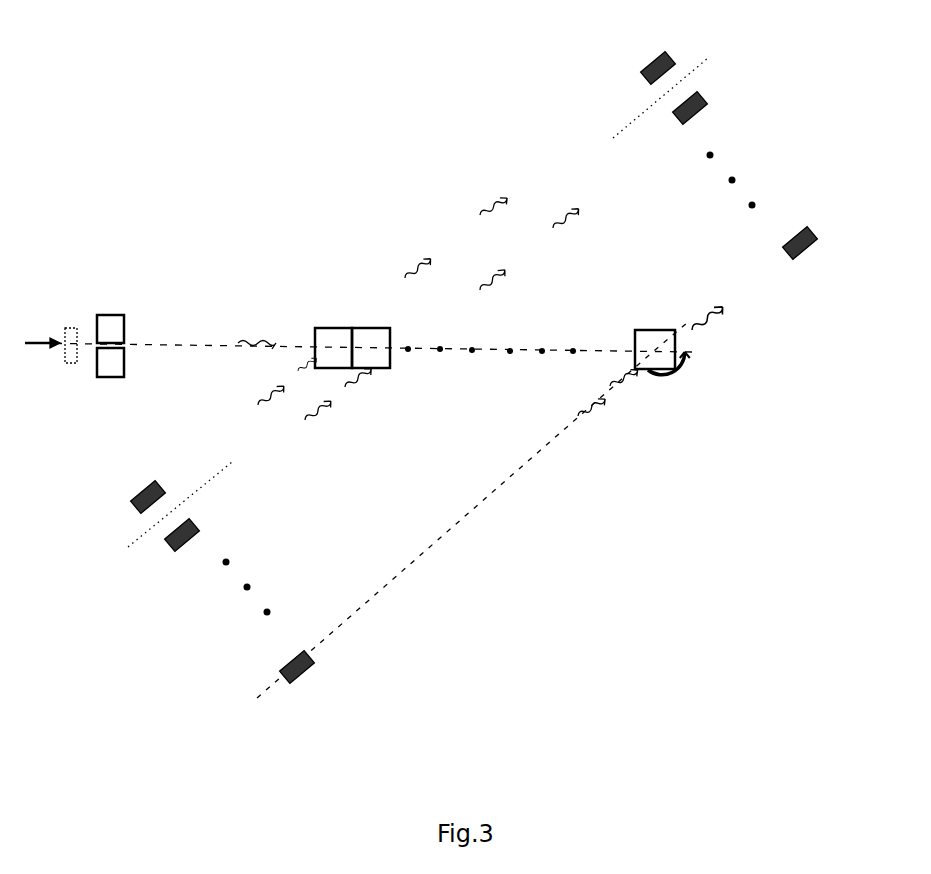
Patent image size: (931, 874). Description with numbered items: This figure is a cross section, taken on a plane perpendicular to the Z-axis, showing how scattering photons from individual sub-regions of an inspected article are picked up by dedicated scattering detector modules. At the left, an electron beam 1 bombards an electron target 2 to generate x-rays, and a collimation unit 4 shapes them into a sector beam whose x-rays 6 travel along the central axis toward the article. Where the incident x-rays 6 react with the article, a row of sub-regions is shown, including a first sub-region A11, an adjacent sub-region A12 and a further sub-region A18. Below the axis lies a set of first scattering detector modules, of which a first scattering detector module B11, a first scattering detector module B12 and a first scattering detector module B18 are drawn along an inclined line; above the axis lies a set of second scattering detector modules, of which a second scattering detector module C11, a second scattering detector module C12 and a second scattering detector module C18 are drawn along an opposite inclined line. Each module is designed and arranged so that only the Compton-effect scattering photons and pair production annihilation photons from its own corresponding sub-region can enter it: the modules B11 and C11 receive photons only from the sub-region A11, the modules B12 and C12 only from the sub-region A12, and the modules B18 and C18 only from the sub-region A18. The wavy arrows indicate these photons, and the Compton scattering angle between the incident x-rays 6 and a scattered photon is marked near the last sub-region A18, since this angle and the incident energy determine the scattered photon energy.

The electron beam 1 is at (42, 332).
The electron target 2 is at (71, 332).
The collimation unit 4 is at (110, 337).
The x-rays 6 is at (257, 333).
The sub-region A11 is at (333, 348).
The sub-region A12 is at (371, 348).
The sub-region A18 is at (655, 349).
The first scattering detector module B11 is at (121, 519).
The first scattering detector module B12 is at (149, 554).
The first scattering detector module B18 is at (265, 689).
The second scattering detector module C11 is at (694, 48).
The second scattering detector module C12 is at (722, 86).
The second scattering detector module C18 is at (830, 222).